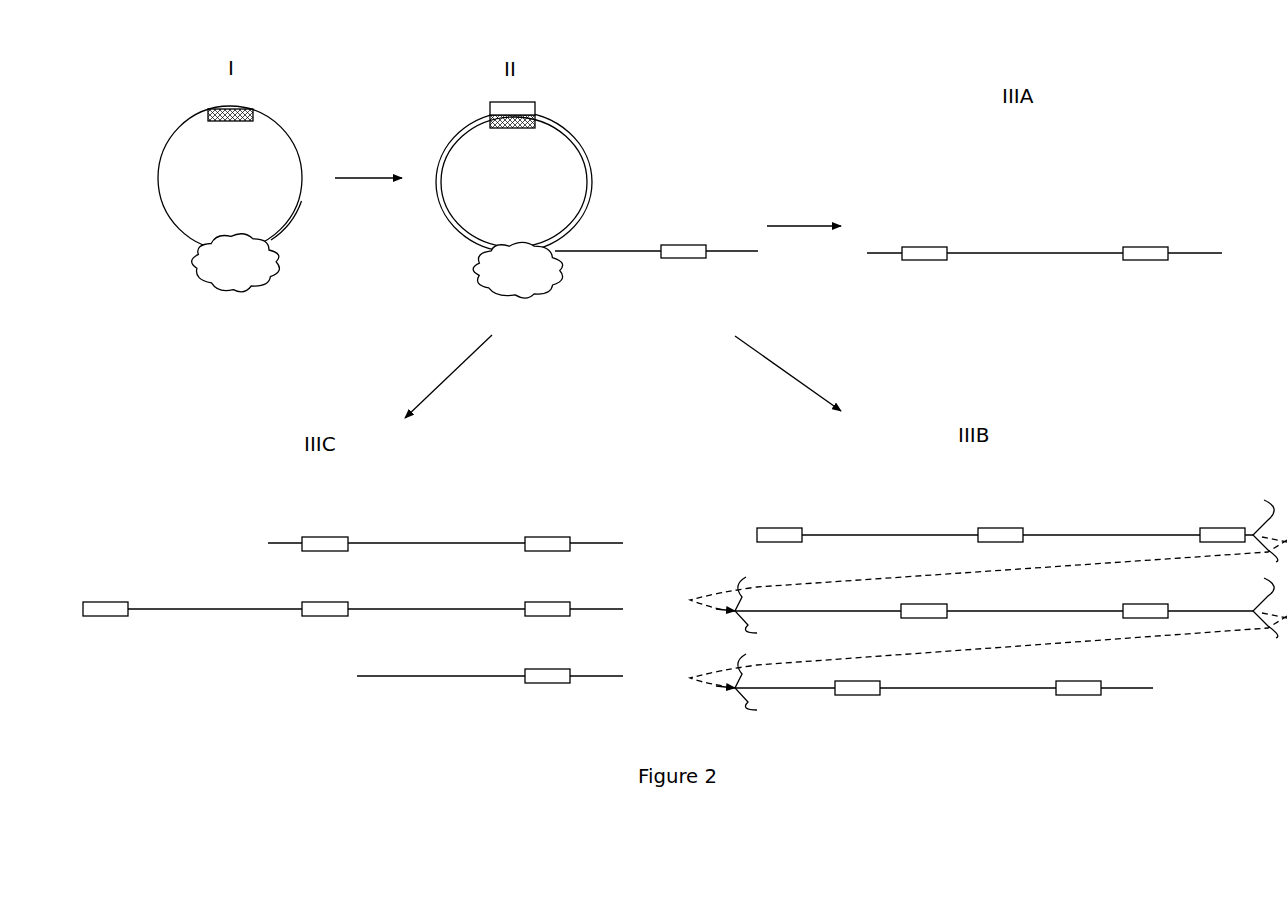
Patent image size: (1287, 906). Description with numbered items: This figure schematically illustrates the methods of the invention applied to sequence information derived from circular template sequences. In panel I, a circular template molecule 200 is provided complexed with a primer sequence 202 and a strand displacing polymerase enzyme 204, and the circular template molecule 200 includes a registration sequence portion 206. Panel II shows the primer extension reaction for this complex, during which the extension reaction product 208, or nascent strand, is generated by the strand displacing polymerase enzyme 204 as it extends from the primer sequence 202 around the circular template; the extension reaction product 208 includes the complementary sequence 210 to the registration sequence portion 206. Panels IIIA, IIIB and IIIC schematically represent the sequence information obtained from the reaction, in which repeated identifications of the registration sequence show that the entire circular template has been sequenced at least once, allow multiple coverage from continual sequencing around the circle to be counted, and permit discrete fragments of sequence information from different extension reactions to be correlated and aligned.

The circular template molecule 200 is at (154, 167).
The primer sequence 202 is at (294, 226).
The strand displacing polymerase enzyme 204 is at (236, 263).
The registration sequence portion 206 is at (252, 102).
The extension reaction product 208 is at (614, 243).
The complementary sequence 210 is at (537, 103).